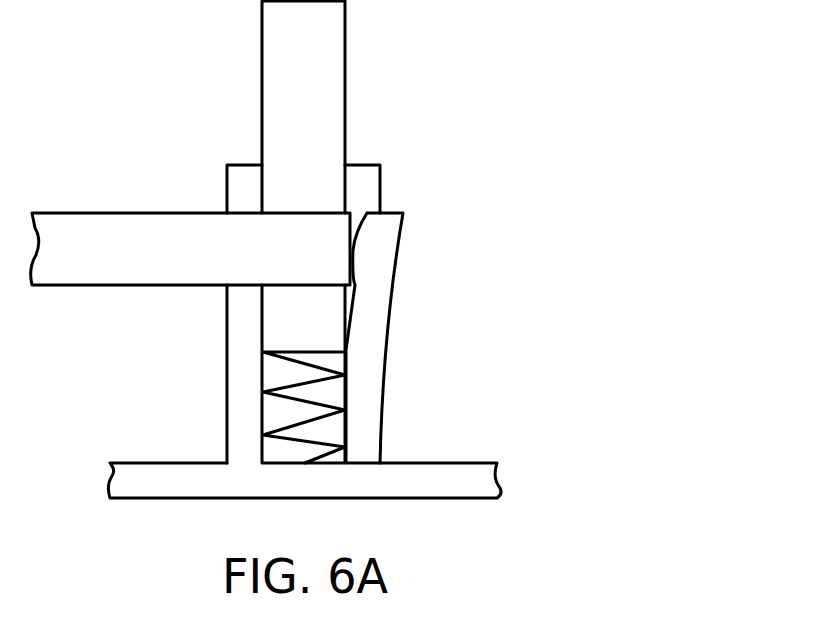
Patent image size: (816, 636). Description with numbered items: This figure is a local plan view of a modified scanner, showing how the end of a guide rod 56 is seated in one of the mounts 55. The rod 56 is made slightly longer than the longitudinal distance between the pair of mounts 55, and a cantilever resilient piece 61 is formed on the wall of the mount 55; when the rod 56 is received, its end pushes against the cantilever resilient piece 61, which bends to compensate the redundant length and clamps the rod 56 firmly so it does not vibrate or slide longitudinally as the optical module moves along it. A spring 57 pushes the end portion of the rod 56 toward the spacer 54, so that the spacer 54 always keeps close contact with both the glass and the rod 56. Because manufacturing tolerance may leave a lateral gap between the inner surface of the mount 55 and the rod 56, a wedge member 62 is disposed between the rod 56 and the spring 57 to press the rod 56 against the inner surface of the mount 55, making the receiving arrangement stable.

The spacer 54 is at (327, 57).
The mount 55 is at (222, 378).
The rod 56 is at (113, 237).
The spring 57 is at (330, 405).
The cantilever resilient piece 61 is at (380, 267).
The wedge member 62 is at (323, 332).